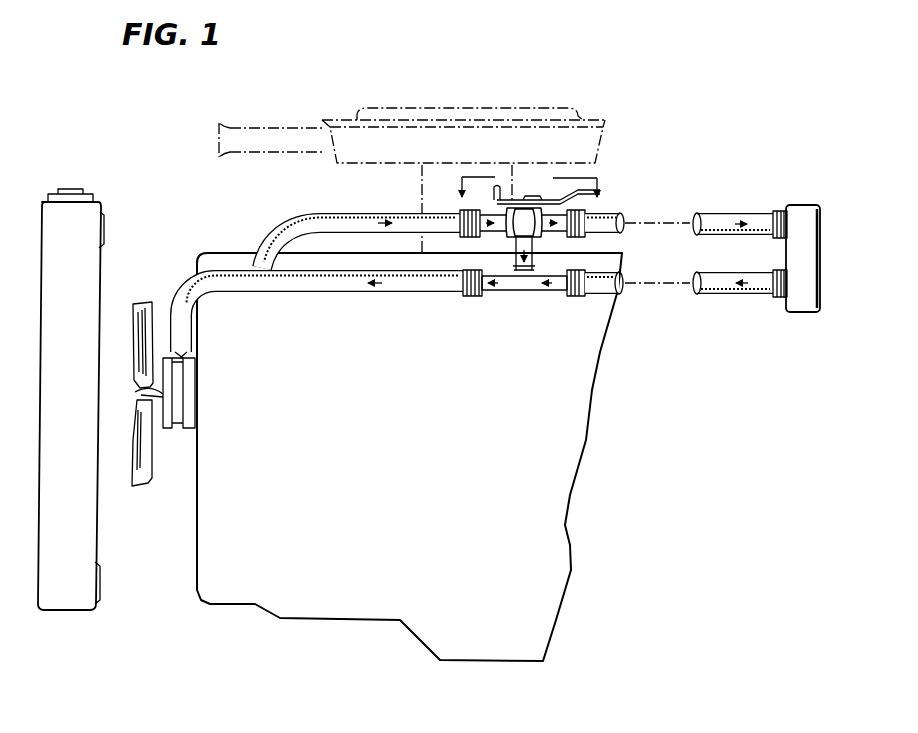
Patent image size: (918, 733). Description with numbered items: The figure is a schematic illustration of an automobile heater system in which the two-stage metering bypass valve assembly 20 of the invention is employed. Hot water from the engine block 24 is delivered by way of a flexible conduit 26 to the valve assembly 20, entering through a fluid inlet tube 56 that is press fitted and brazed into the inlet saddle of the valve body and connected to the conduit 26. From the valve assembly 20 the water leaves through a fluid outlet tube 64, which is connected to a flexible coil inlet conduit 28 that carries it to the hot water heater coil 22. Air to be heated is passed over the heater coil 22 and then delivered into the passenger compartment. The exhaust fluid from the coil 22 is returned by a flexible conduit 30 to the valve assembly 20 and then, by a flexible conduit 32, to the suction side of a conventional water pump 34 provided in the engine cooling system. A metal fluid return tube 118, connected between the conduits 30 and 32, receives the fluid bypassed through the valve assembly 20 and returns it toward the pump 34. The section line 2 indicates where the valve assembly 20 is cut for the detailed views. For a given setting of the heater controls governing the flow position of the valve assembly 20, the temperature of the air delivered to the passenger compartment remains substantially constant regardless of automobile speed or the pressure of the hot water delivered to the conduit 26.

The section line 2- 2 is at (526, 183).
The valve assembly 20 is at (583, 200).
The hot water heater coil 22 is at (790, 302).
The engine block 24 is at (421, 403).
The flexible conduit 26 is at (372, 212).
The flexible coil inlet conduit 28 is at (731, 213).
The flexible conduit 30 is at (706, 296).
The flexible conduit 32 is at (386, 295).
The water pump 34 is at (175, 390).
The fluid inlet tube 56 is at (496, 238).
The fluid outlet tube 64 is at (552, 236).
The fluid return tube 118 is at (502, 293).